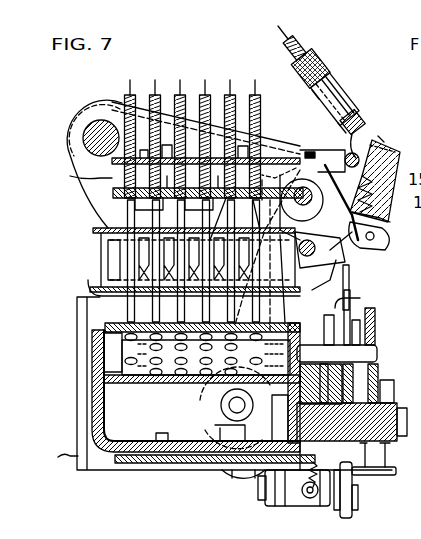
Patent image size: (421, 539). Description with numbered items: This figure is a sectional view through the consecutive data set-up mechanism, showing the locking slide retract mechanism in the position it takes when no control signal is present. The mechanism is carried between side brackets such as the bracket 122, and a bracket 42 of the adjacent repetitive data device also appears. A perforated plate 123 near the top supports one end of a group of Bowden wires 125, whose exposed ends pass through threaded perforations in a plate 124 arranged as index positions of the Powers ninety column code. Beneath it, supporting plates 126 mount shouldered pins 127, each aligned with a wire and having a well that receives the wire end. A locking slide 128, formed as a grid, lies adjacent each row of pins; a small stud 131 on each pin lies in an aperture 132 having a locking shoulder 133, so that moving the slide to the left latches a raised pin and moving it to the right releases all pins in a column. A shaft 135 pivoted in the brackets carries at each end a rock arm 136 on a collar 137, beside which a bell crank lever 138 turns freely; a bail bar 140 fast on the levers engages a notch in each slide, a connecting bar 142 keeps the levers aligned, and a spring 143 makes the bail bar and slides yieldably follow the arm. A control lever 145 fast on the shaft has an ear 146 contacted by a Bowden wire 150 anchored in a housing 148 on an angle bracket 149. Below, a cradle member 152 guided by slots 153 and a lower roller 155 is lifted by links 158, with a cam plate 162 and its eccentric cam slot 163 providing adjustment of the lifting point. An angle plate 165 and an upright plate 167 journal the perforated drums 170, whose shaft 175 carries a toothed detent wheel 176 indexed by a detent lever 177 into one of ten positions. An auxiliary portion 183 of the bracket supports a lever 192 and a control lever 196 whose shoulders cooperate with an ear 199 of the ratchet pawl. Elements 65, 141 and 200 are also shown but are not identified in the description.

The bracket 42 is at (55, 462).
The hinge pin 65 is at (97, 128).
The bracket 122 is at (99, 472).
The perforated plate 123 is at (90, 170).
The plate 124 is at (118, 197).
The Bowden wires 125 is at (250, 90).
The supporting plates 126 is at (100, 280).
The shouldered pins 127 is at (178, 300).
The locking slide 128 is at (100, 290).
The stud 131 is at (128, 272).
The aperture 132 is at (147, 210).
The locking shoulder 133 is at (175, 245).
The shaft 135 is at (364, 188).
The rock arm 136 is at (384, 242).
The collar 137 is at (329, 161).
The bell crank lever 138 is at (335, 262).
The bail bar 140 is at (343, 289).
The pin 141 is at (340, 250).
The connecting bar 142 is at (320, 165).
The spring 143 is at (387, 221).
The control lever 145 is at (382, 160).
The ear 146 is at (385, 142).
The housing 148 is at (338, 105).
The angle bracket 149 is at (364, 118).
The Bowden wire 150 is at (298, 36).
The cradle member 152 is at (151, 464).
The slots 153 is at (215, 463).
The lower roller 155 is at (212, 432).
The links 158 is at (232, 478).
The cam plate 162 is at (162, 428).
The eccentric cam slot 163 is at (215, 396).
The angle plate 165 is at (96, 430).
The upright plate 167 is at (395, 443).
The perforated drums 170 is at (118, 380).
The shaft 175 is at (380, 363).
The toothed detent wheel 176 is at (376, 322).
The detent lever 177 is at (372, 394).
The auxiliary portion 183 is at (287, 506).
The lever 192 is at (328, 508).
The control lever 196 is at (354, 514).
The ear 199 is at (360, 312).
The rod 200 is at (392, 476).